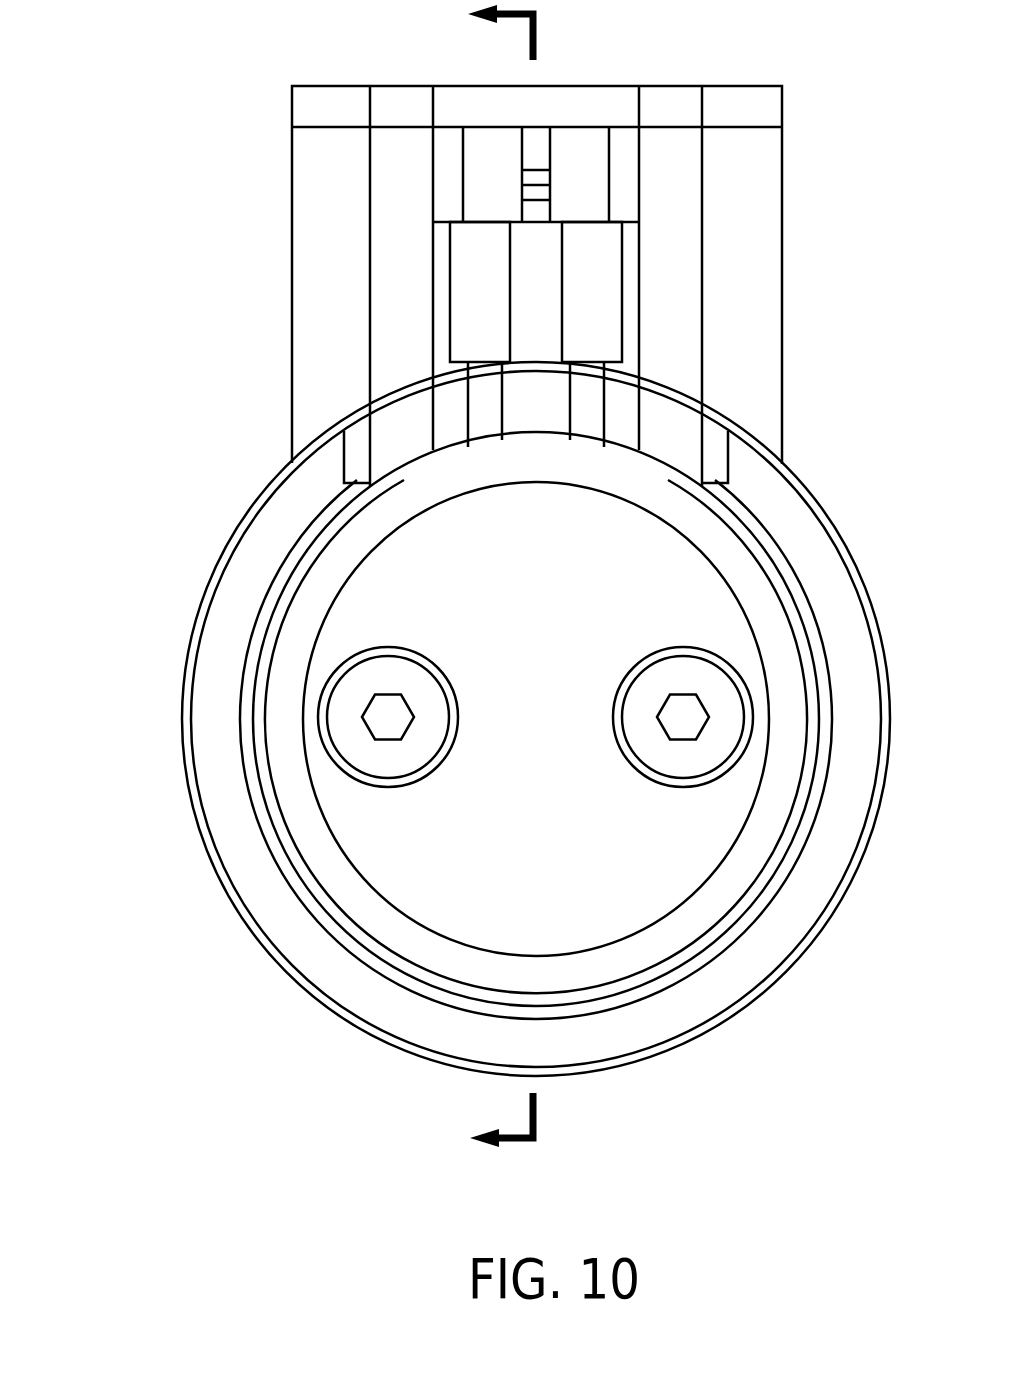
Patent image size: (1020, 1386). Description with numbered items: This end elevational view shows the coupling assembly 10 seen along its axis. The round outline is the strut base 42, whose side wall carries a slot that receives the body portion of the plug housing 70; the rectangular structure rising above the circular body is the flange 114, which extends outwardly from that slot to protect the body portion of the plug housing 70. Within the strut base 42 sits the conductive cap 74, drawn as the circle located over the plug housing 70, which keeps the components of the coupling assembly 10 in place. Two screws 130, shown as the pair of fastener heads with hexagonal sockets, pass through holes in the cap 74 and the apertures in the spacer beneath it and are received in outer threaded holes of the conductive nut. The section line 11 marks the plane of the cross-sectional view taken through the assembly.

The coupling assembly 10 is at (160, 392).
The section line 11- 11 is at (480, 584).
The strut base 42 is at (203, 708).
The plug housing 70 is at (636, 285).
The conductive cap 74 is at (657, 902).
The flange 114 is at (767, 326).
The screws 130 is at (647, 678).